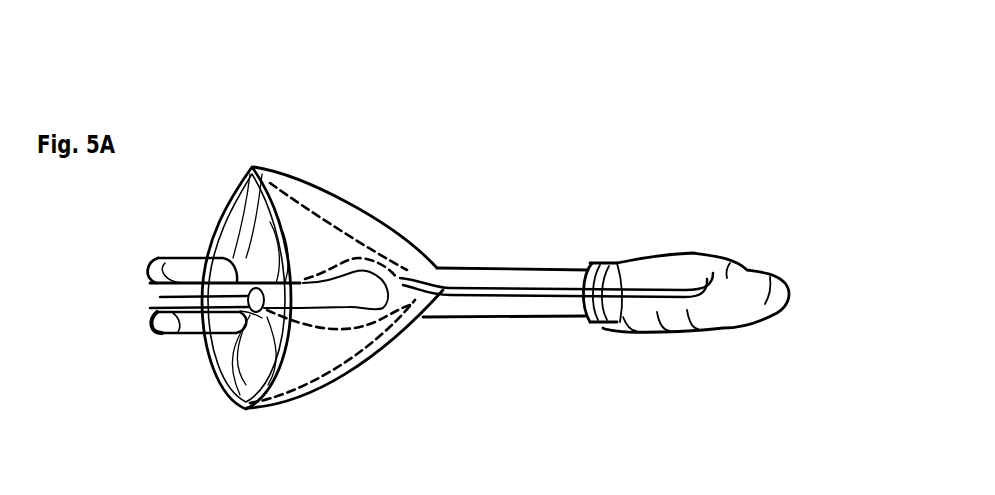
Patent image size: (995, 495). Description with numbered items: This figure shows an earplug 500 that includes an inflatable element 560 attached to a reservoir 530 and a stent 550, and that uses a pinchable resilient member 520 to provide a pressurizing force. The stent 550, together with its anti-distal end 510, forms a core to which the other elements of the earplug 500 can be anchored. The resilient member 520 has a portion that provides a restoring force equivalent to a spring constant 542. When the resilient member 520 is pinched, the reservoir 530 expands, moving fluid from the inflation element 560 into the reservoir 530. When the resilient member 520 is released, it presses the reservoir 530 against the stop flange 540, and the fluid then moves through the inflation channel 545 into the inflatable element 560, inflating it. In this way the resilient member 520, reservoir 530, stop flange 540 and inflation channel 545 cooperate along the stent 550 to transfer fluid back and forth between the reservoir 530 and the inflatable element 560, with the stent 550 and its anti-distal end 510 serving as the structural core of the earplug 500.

The earplug 500 is at (517, 163).
The anti-distal end 510 is at (160, 297).
The resilient member 520 is at (200, 268).
The reservoir 530 is at (230, 212).
The stop flange 540 is at (372, 228).
The spring constant 542 is at (383, 290).
The inflation channel 545 is at (560, 297).
The stent 550 is at (540, 272).
The inflatable element 560 is at (660, 256).